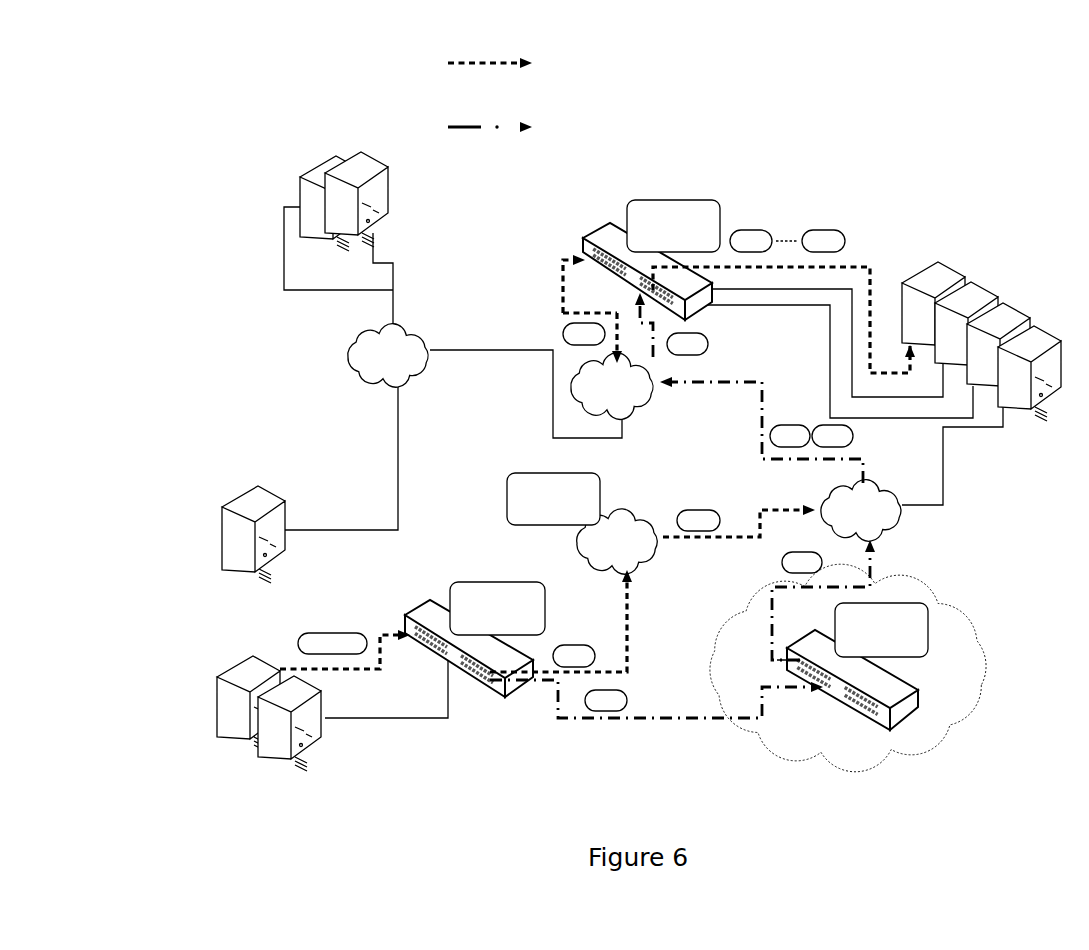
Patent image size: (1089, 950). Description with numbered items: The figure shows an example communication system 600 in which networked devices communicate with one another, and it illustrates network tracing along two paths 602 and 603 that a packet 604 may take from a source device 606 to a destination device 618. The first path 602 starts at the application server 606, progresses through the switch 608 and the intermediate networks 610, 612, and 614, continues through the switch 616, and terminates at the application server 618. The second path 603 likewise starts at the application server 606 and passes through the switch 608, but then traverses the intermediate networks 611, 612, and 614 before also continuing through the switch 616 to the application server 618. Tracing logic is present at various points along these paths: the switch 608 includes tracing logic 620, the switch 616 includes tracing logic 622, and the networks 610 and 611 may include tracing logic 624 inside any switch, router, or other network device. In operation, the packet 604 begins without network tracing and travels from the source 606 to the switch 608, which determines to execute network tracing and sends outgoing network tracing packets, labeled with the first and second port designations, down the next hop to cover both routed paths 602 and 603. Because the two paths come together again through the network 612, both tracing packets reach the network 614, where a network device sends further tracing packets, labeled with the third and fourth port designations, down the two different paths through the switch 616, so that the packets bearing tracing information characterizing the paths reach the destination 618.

The communication system 600 is at (56, 54).
The path 602 is at (470, 67).
The path 603 is at (476, 129).
The packet 604 is at (352, 636).
The source device 606 is at (218, 733).
The switch 608 is at (505, 698).
The intermediate network 610 is at (600, 566).
The intermediate network 611 is at (782, 740).
The intermediate network 612 is at (900, 520).
The intermediate network 614 is at (640, 407).
The switch 616 is at (600, 231).
The destination device 618 is at (901, 282).
The tracing logic 620 is at (477, 582).
The tracing logic 622 is at (708, 203).
The tracing logic 624 is at (508, 474).